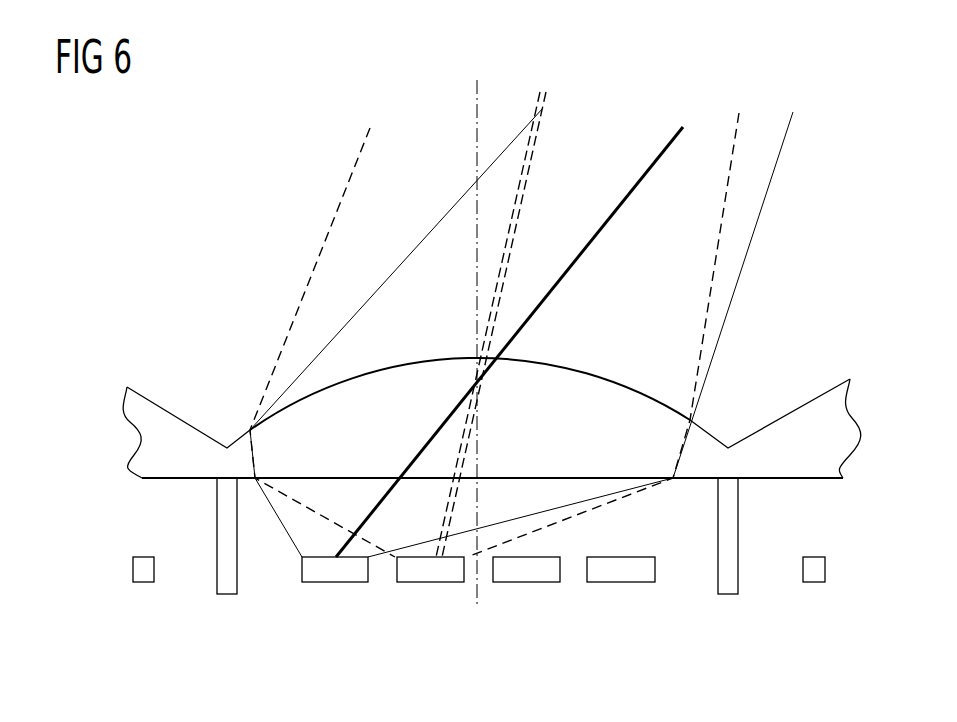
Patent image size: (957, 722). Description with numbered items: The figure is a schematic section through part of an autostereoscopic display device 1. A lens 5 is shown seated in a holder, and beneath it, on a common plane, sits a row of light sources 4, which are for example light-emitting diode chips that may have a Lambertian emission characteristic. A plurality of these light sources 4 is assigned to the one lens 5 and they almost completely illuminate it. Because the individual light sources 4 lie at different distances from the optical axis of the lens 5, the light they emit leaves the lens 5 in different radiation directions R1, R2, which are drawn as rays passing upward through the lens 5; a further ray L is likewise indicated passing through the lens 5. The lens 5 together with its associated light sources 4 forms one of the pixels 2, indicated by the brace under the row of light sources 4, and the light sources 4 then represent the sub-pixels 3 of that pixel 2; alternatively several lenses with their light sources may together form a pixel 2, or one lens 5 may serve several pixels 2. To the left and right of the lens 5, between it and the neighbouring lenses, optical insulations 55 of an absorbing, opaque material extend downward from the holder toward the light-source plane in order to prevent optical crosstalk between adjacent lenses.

The light / optical sensor arrangement 1 is at (806, 152).
The pixel 2 is at (479, 629).
The sub-pixel 3 is at (479, 595).
The light source 4 is at (302, 632).
The lens 5 is at (590, 375).
The optical insulation 55 is at (729, 588).
The light ray L is at (327, 238).
The radiation direction R1 is at (640, 177).
The radiation direction R2 is at (537, 142).